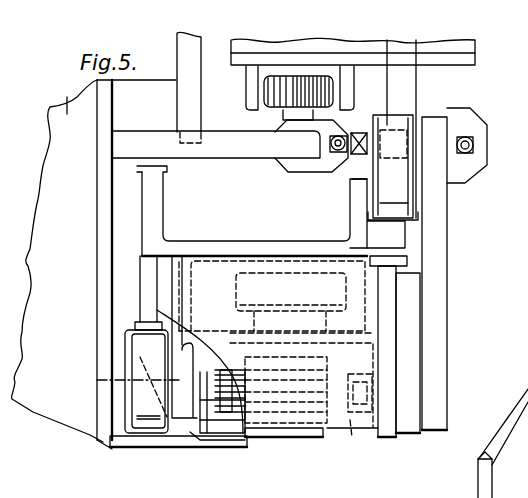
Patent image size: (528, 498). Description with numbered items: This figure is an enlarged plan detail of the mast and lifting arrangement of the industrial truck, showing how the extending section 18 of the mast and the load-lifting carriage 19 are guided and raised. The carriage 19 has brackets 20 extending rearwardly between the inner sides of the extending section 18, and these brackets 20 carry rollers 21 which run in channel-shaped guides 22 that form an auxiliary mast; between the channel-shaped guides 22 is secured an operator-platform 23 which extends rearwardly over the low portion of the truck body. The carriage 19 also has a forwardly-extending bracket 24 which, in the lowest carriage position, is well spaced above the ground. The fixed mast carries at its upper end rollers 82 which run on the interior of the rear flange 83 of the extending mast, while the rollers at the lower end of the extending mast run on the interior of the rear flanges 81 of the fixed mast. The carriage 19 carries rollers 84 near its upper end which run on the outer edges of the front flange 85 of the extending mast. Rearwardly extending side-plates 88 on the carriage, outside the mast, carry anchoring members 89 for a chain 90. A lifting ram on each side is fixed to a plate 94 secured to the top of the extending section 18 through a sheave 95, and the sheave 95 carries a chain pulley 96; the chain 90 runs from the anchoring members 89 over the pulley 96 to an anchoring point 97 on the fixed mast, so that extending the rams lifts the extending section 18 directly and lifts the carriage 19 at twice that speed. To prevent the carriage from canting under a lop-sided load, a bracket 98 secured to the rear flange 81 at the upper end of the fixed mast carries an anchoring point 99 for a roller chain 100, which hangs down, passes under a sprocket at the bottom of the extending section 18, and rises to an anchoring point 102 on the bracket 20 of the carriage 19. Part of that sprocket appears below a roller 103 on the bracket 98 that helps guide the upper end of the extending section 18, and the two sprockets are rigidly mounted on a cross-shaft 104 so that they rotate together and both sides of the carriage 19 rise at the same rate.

The extending section 18 is at (152, 201).
The load-lifting carriage 19 is at (101, 397).
The brackets 20 is at (241, 150).
The rollers 21 is at (278, 90).
The channel-shaped guides 22 is at (349, 88).
The operator-platform 23 is at (452, 50).
The forwardly-extending bracket 24 is at (57, 259).
The rear flanges 81 is at (395, 325).
The rollers 82 is at (385, 294).
The rear flange 83 is at (405, 266).
The rollers 84 is at (143, 343).
The front flange 85 is at (147, 283).
The side-plates 88 is at (133, 446).
The anchoring members 89 is at (212, 426).
The chain 90 is at (238, 426).
The plate 94 is at (368, 426).
The sheave 95 is at (290, 440).
The chain pulley 96 is at (233, 410).
The anchoring point 97 is at (380, 404).
The bracket 98 is at (439, 206).
The anchoring point 99 is at (472, 140).
The roller chain 100 is at (482, 163).
The anchoring point 102 is at (336, 152).
The roller 103 is at (386, 200).
The cross-shaft 104 is at (402, 87).